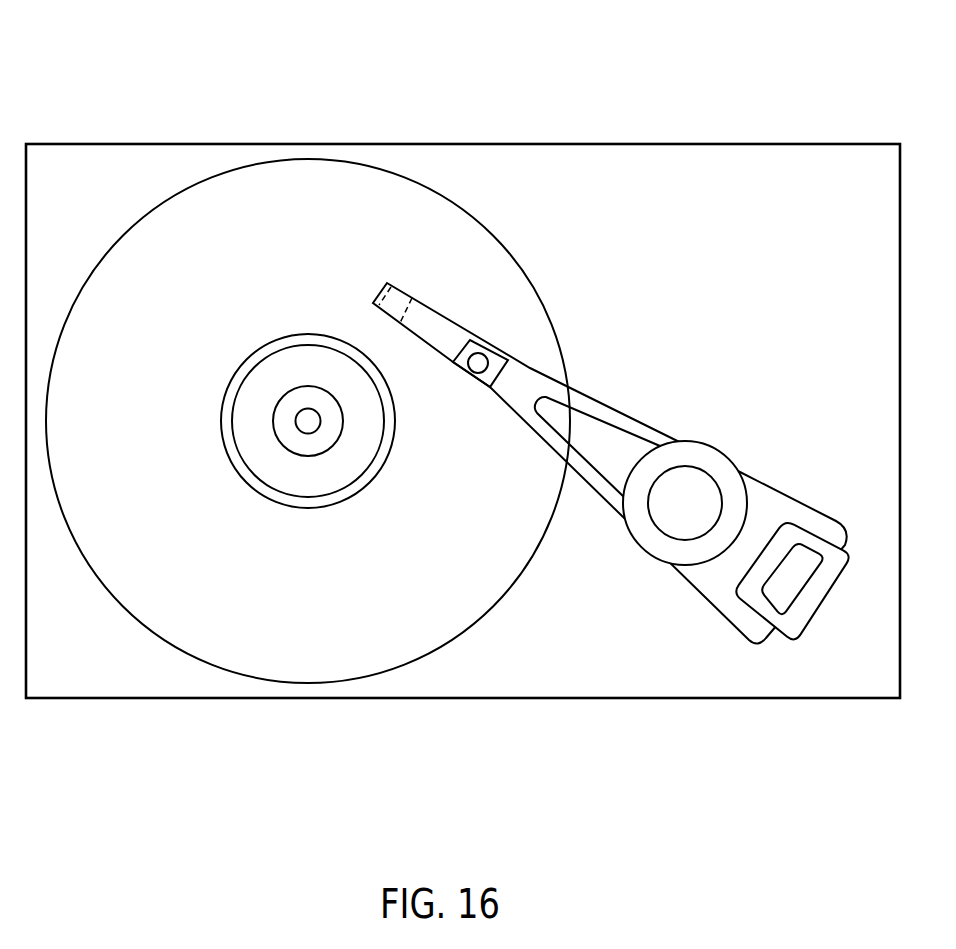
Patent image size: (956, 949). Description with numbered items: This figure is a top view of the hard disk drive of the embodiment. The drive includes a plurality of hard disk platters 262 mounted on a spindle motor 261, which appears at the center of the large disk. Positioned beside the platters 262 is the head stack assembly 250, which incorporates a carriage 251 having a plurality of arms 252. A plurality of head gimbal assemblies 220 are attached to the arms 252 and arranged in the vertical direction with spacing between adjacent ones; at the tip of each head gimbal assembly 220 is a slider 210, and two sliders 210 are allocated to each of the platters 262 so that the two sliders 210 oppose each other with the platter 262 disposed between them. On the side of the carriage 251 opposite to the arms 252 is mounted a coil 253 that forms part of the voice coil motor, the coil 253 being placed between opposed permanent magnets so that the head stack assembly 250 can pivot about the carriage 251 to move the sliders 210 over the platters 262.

The slider 210 is at (400, 290).
The head gimbal assembly 220 is at (445, 357).
The head stack assembly 250 is at (692, 586).
The carriage 251 is at (697, 443).
The arm 252 is at (602, 496).
The coil 253 is at (824, 600).
The spindle motor 261 is at (308, 434).
The hard disk platter 262 is at (217, 666).